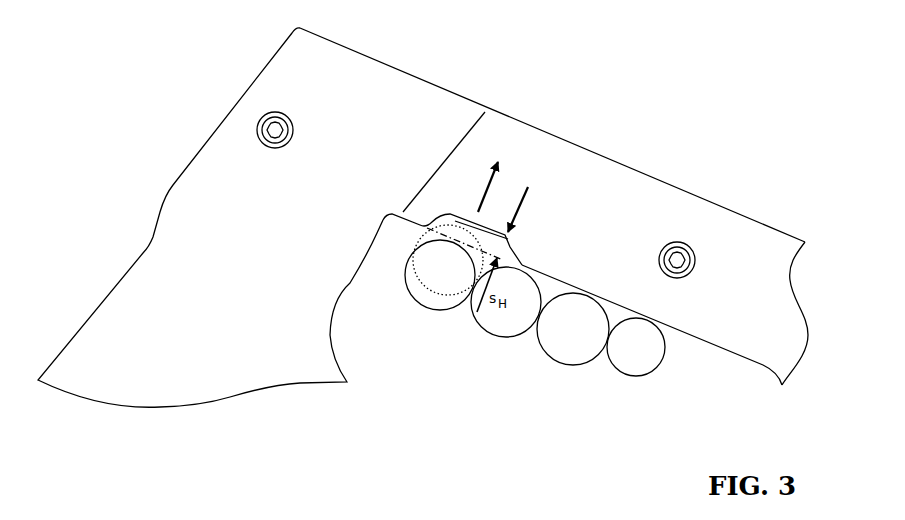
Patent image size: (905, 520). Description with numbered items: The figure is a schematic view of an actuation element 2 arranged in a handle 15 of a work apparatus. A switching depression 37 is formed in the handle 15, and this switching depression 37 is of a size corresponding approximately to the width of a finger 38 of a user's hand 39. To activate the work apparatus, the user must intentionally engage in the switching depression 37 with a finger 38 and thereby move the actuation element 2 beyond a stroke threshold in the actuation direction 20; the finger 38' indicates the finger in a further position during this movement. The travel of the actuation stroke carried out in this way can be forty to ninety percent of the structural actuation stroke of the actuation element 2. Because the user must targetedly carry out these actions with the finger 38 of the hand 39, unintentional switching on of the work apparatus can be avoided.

The actuation direction 20 is at (486, 197).
The actuation element 2 is at (485, 225).
The switching depression 37 is at (503, 250).
The handle 15 is at (727, 240).
The finger 38 is at (440, 304).
The finger 38' is at (448, 304).
The user's hand 39 is at (538, 367).